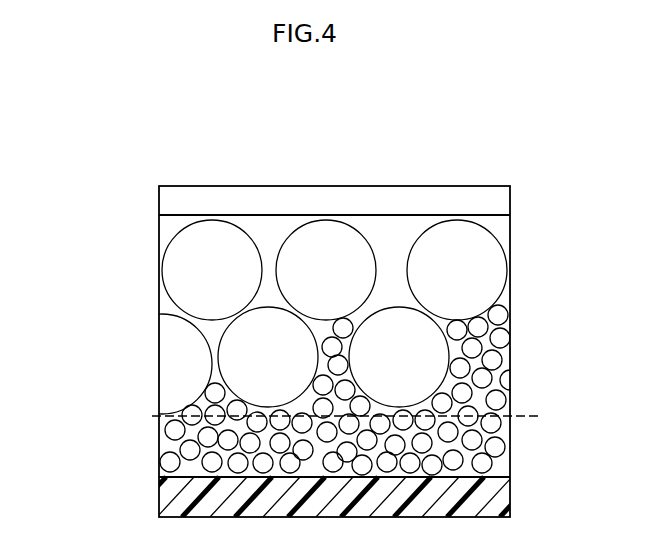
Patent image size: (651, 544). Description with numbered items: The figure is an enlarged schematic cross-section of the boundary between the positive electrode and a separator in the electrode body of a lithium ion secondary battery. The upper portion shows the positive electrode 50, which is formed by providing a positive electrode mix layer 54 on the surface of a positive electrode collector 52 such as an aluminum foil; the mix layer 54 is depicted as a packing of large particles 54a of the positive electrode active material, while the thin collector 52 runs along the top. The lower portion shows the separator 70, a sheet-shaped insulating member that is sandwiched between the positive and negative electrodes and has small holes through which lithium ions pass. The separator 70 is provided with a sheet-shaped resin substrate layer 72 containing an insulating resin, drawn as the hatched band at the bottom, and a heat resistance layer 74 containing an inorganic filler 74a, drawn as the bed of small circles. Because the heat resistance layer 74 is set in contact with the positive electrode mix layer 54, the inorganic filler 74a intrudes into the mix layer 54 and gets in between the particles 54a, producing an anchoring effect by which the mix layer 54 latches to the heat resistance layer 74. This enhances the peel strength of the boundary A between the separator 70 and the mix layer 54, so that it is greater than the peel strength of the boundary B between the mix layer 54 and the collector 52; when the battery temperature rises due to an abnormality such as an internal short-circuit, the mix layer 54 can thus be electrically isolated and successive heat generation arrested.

The positive electrode 50 is at (72, 186).
The positive electrode collector 52 is at (137, 186).
The positive electrode mix layer 54 is at (132, 220).
The particles of the positive electrode active material 54a is at (497, 266).
The separator 70 is at (72, 418).
The resin substrate layer 72 is at (132, 481).
The heat resistance layer 74 is at (132, 420).
The inorganic filler 74a is at (502, 446).
The boundary between separator and positive electrode mix layer A is at (538, 408).
The boundary between positive electrode mix layer and positive electrode collector B is at (426, 206).